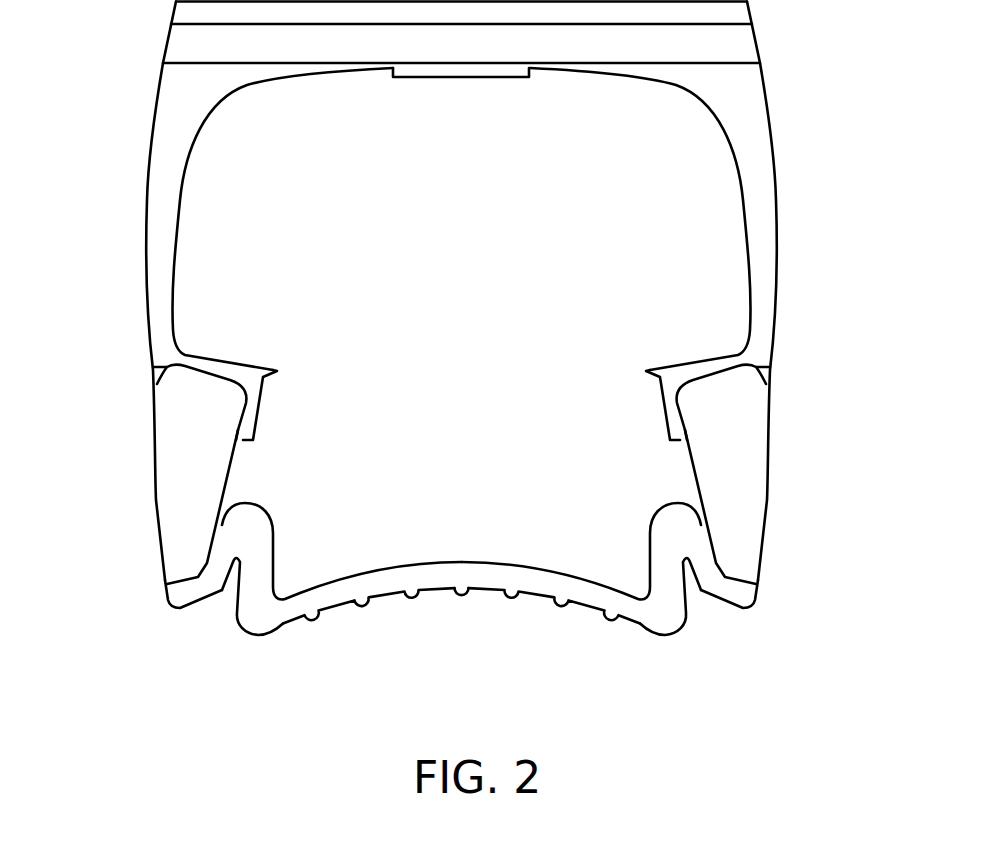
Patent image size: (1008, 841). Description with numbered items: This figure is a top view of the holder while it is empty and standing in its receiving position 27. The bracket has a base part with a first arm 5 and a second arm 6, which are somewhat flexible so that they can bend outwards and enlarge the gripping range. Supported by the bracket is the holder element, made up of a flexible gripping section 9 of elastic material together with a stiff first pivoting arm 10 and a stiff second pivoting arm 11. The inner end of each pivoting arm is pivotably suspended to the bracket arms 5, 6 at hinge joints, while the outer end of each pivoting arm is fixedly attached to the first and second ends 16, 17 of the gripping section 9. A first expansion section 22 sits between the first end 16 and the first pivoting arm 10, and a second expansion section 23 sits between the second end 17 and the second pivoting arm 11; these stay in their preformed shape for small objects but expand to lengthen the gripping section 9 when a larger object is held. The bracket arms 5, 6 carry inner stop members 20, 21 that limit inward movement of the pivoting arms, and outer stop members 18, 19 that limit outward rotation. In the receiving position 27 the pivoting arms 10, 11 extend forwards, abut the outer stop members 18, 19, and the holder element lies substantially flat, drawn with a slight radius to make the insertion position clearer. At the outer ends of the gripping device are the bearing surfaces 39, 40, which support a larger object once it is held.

The first arm 5 is at (751, 142).
The second arm 6 is at (172, 142).
The flexible gripping section 9 is at (463, 580).
The first pivoting arm 10 is at (735, 513).
The second pivoting arm 11 is at (188, 513).
The first end of the gripping section 16 is at (680, 667).
The second end of the gripping section 17 is at (243, 667).
The outer stop member 18 is at (763, 377).
The outer stop member 19 is at (160, 377).
The inner stop member 20 is at (640, 382).
The inner stop member 21 is at (283, 382).
The first expansion section 22 is at (653, 498).
The second expansion section 23 is at (270, 498).
The receiving position 27 is at (342, 667).
The bearing surface 39 is at (723, 602).
The bearing surface 40 is at (200, 602).